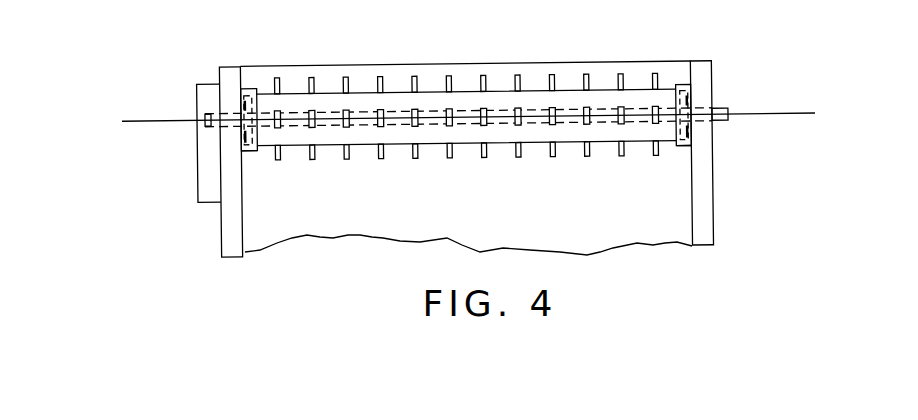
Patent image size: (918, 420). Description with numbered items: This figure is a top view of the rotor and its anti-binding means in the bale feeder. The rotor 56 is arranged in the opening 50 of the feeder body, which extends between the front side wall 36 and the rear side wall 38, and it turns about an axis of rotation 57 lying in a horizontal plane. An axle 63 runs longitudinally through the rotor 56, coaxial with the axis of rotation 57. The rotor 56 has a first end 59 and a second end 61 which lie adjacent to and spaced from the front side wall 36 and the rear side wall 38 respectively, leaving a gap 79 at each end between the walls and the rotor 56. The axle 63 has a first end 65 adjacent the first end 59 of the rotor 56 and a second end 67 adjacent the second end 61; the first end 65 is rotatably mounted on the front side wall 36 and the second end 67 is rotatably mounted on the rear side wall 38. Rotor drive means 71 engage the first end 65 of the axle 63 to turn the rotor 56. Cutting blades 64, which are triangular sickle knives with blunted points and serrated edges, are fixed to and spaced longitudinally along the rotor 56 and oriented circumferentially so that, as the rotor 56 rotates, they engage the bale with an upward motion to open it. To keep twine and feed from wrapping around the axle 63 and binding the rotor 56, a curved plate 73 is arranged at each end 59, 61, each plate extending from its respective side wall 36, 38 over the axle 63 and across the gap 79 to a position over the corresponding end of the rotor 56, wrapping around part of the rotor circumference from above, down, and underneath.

The front side wall 36 is at (232, 237).
The rear side wall 38 is at (703, 220).
The opening 50 is at (531, 59).
The rotor 56 is at (398, 146).
The axis of rotation 57 is at (140, 122).
The first end of rotor 59 is at (259, 103).
The second end of rotor 61 is at (665, 100).
The axle 63 is at (436, 110).
The cutting blades 64 is at (518, 158).
The first end of axle 65 is at (211, 113).
The second end of axle 67 is at (717, 109).
The rotor drive means 71 is at (212, 190).
The curved plate 73 is at (248, 153).
The gap 79 is at (251, 92).